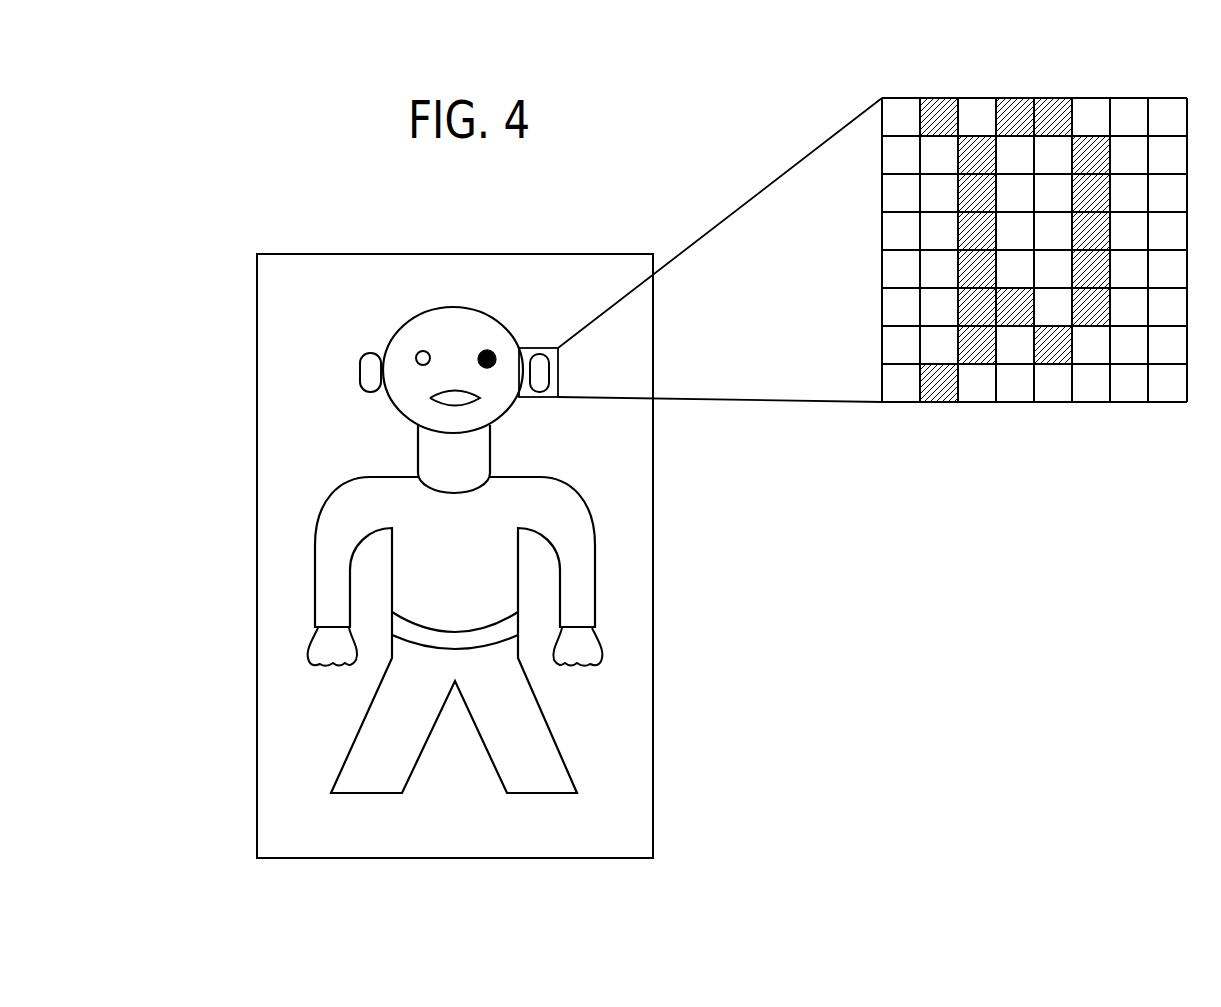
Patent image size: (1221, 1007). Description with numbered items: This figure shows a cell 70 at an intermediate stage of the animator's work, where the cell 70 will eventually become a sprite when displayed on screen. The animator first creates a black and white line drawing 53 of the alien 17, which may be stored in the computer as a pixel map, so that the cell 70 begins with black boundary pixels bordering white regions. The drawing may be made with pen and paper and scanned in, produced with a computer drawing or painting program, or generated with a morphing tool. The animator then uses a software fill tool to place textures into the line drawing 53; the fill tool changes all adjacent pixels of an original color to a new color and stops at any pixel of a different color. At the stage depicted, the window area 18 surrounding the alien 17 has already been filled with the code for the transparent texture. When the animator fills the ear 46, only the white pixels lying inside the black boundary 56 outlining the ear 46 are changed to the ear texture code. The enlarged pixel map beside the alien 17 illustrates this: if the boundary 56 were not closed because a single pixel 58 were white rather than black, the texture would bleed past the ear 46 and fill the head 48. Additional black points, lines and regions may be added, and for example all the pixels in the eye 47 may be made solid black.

The alien 17 is at (418, 304).
The window area 18 is at (298, 262).
The ear 46 is at (541, 395).
The eye 47 is at (488, 350).
The head 48 is at (503, 324).
The black and white line drawing 53 is at (584, 528).
The black boundary 56 is at (1047, 97).
The pixel 58 is at (882, 253).
The cell 70 is at (257, 771).